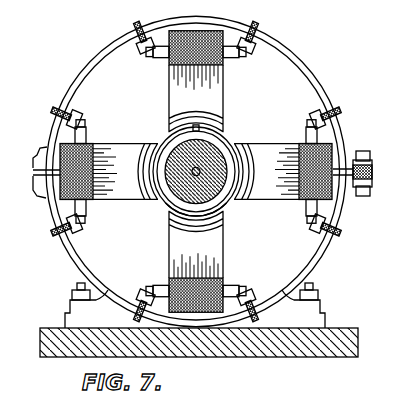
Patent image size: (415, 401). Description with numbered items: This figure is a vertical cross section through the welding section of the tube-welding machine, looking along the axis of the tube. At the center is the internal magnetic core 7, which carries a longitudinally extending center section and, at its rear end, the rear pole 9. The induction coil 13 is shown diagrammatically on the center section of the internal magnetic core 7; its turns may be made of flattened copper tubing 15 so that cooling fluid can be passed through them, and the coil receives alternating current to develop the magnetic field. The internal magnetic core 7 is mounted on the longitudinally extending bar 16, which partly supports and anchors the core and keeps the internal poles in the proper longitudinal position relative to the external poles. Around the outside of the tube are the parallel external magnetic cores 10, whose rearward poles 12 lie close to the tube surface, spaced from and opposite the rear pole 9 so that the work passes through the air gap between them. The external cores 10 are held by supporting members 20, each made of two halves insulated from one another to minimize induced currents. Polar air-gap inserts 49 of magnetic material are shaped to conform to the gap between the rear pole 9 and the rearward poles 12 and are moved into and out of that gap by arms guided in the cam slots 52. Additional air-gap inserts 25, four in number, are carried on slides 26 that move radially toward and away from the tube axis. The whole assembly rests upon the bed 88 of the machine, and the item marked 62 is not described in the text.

The internal magnetic core 7 is at (196, 172).
The rear pole 9 is at (160, 208).
The external magnetic cores 10 is at (212, 34).
The rearward poles 12 is at (145, 150).
The induction coil 13 is at (224, 150).
The flattened copper tubing 15 is at (195, 128).
The bar 16 is at (196, 172).
The supporting member 20 is at (311, 76).
The polar air-gap inserts 49 is at (168, 128).
The lead 62 is at (414, 72).
The cam slots 52 is at (408, 108).
The bed 88 is at (348, 357).
The slides 26 is at (193, 395).
The air-gap inserts 25 is at (316, 396).